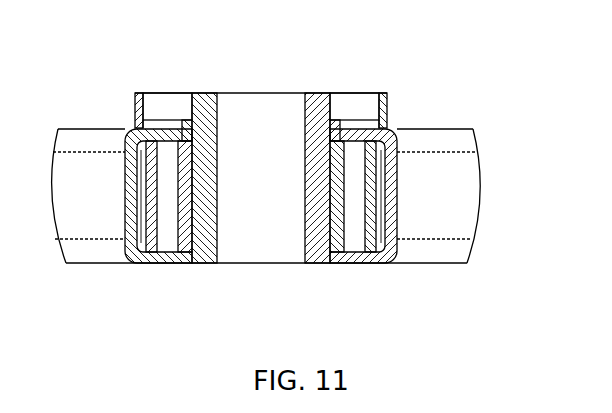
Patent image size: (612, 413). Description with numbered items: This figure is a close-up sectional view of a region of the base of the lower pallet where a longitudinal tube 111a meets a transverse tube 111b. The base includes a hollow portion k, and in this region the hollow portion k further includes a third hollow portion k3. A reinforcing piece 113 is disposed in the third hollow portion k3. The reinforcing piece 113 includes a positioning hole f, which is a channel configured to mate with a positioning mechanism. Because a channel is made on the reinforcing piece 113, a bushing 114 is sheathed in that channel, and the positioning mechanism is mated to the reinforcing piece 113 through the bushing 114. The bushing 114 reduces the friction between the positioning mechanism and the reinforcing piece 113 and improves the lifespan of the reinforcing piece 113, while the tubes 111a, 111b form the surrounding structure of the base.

The bushing 114 is at (205, 98).
The longitudinal tube 111a is at (437, 140).
The transverse tube 111b is at (383, 253).
The reinforcing piece 113 is at (330, 253).
The third hollow portion k3 is at (142, 263).
The hollow portion k is at (93, 312).
The positioning hole f is at (243, 240).